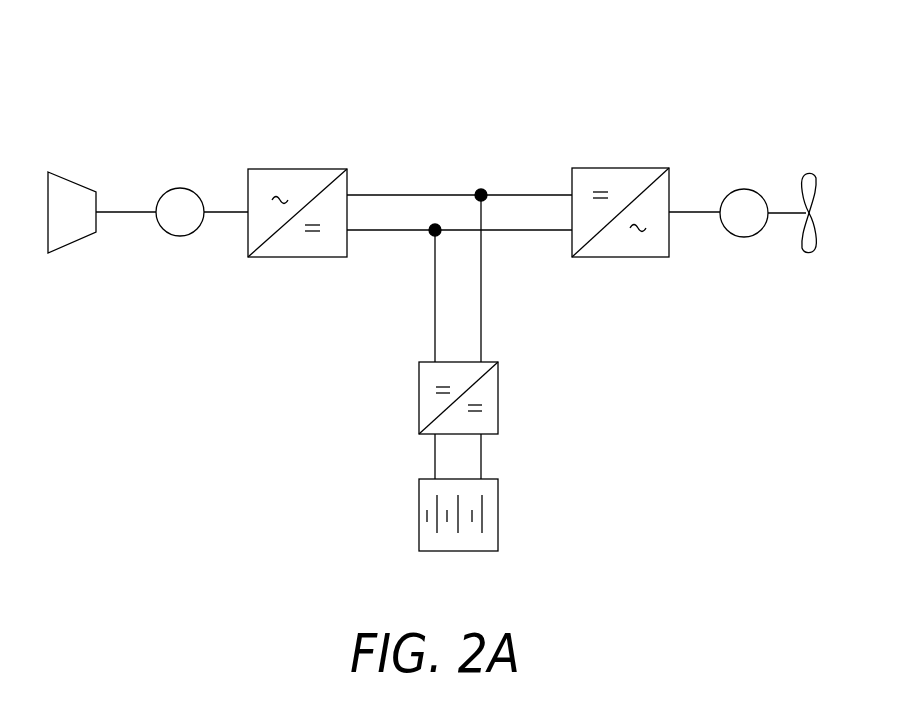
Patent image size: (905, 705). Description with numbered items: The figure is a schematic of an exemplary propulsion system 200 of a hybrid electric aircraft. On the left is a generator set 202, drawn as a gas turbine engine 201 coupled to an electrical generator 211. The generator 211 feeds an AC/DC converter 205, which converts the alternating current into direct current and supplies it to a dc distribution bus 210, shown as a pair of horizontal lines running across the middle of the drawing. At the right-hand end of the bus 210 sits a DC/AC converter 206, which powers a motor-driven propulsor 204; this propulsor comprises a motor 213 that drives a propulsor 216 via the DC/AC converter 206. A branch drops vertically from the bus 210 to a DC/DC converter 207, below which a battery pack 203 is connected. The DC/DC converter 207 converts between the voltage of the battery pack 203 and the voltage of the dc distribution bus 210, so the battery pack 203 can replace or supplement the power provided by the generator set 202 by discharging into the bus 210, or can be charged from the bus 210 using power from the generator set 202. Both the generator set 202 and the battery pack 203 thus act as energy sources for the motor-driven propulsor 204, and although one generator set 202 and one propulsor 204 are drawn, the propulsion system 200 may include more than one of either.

The propulsion system 200 is at (212, 44).
The generator set 202 is at (230, 120).
The gas turbine engine 201 is at (72, 182).
The electrical generator 211 is at (178, 188).
The AC/DC converter 205 is at (297, 169).
The dc distribution bus 210 is at (400, 195).
The DC/AC converter 206 is at (620, 168).
The motor-driven propulsor 204 is at (853, 120).
The motor 213 is at (744, 189).
The propeller 216 is at (810, 175).
The DC/DC converter 207 is at (498, 398).
The battery pack 203 is at (498, 515).